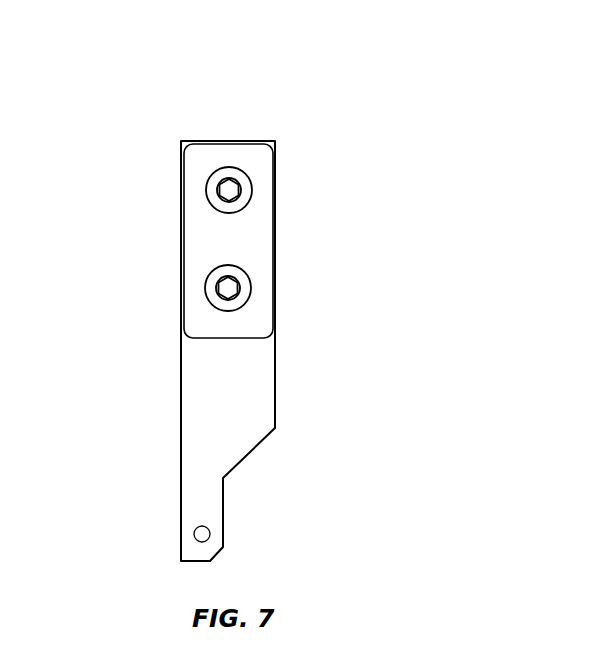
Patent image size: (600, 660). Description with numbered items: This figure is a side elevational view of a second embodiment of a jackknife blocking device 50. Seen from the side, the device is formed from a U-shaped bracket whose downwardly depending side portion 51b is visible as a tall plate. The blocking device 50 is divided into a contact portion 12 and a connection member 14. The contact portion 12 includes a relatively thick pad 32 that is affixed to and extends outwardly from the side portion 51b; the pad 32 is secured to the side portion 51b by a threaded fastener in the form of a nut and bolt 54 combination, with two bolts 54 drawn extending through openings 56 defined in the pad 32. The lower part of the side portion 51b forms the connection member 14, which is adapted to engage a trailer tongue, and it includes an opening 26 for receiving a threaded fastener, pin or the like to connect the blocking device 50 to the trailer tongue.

The blocking device 50 is at (403, 91).
The contact portion 12 is at (383, 205).
The connection member 14 is at (320, 412).
The side portion 51b is at (194, 351).
The pad 32 is at (200, 241).
The bolt 54 is at (230, 225).
The opening 56 is at (228, 271).
The opening 26 is at (238, 515).